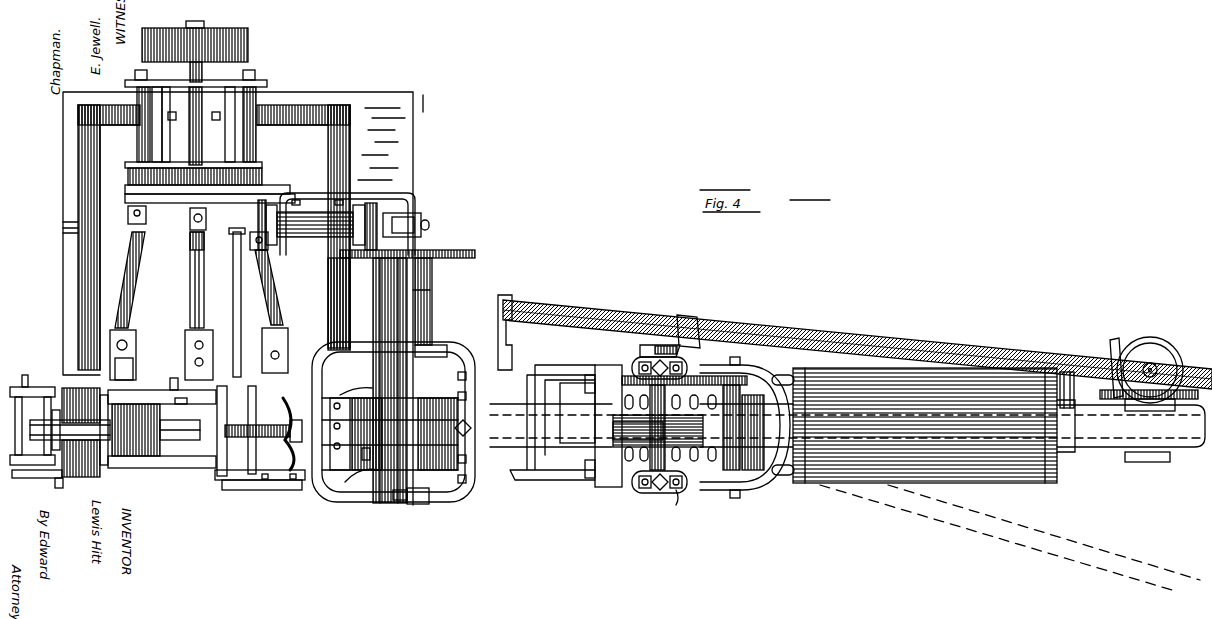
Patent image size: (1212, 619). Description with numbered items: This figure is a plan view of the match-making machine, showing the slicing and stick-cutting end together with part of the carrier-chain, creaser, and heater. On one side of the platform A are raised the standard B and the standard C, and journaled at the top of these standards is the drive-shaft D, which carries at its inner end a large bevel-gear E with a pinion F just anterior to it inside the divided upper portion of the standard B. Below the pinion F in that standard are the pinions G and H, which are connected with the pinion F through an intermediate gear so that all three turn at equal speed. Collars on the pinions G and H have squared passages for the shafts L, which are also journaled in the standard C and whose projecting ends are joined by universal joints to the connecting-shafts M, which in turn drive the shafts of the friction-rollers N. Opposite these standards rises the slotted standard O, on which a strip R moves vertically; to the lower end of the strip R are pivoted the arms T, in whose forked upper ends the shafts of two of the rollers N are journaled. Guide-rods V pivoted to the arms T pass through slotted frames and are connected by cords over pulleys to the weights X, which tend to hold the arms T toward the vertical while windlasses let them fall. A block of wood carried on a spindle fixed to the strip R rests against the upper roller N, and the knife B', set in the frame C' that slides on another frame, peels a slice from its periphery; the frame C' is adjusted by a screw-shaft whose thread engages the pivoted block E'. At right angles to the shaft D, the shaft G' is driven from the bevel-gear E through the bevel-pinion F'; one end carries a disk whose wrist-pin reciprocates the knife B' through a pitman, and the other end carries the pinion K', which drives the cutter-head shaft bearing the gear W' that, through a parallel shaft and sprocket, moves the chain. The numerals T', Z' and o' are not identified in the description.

The platform A is at (372, 167).
The drive-shaft D is at (196, 72).
The standard C is at (206, 80).
The shafts L is at (137, 145).
The bevel-gear E is at (266, 276).
The pinion F is at (202, 128).
The standard B is at (205, 161).
The pinion G is at (207, 181).
The pinion H is at (128, 177).
The connecting-shafts M is at (132, 271).
The rod T' is at (244, 302).
The standard O is at (183, 395).
The shaft G' is at (315, 225).
The bevel-pinion F' is at (272, 230).
The pinion K' is at (354, 214).
The gear W' is at (407, 260).
The vertical shaft Z' is at (380, 380).
The weight X is at (432, 289).
The hose o' is at (356, 428).
The friction-rollers N is at (112, 455).
The strip R is at (176, 402).
The arms T is at (119, 422).
The pivoted block E' is at (259, 431).
The frame C' is at (260, 467).
The knife B' is at (262, 495).
The guide-rods V is at (847, 425).